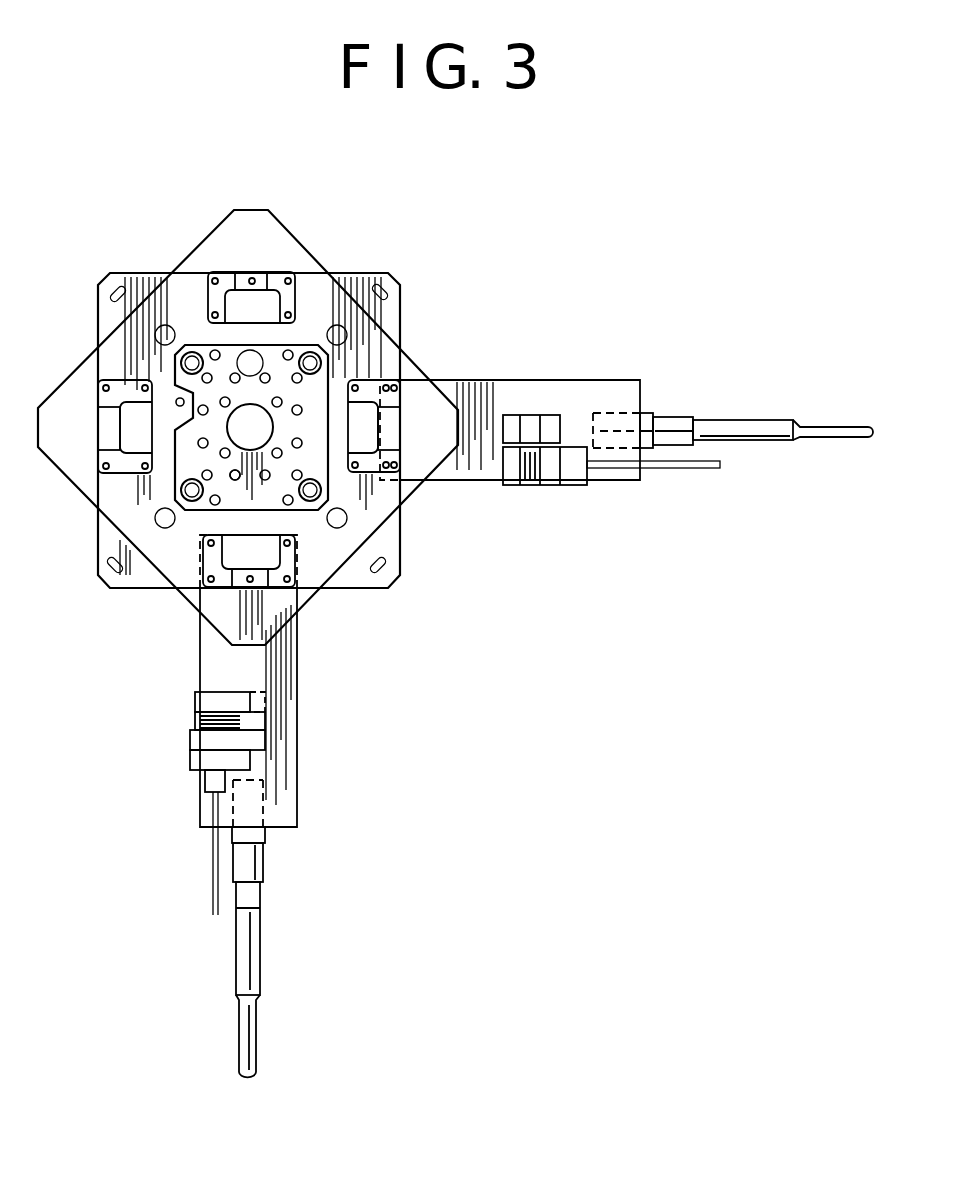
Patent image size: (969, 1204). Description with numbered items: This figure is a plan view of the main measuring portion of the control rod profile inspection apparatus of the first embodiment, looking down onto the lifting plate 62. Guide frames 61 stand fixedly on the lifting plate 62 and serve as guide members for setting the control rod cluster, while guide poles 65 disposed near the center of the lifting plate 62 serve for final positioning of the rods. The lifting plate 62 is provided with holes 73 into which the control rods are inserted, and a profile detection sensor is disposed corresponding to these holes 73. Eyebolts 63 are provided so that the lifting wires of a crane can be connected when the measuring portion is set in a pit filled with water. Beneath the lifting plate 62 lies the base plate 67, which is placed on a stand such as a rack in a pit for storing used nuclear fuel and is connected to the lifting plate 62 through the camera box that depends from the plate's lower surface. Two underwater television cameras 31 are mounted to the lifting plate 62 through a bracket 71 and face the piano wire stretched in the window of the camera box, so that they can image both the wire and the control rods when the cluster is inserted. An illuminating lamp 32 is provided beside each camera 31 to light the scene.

The underwater television camera 31 is at (675, 417).
The illuminating lamp 32 is at (510, 485).
The guide frame 61 is at (262, 272).
The lifting plate 62 is at (307, 587).
The eyebolt 63 is at (122, 285).
The guide pole 65 is at (318, 365).
The base plate 67 is at (137, 575).
The bracket 71 is at (612, 380).
The hole 73 is at (233, 478).